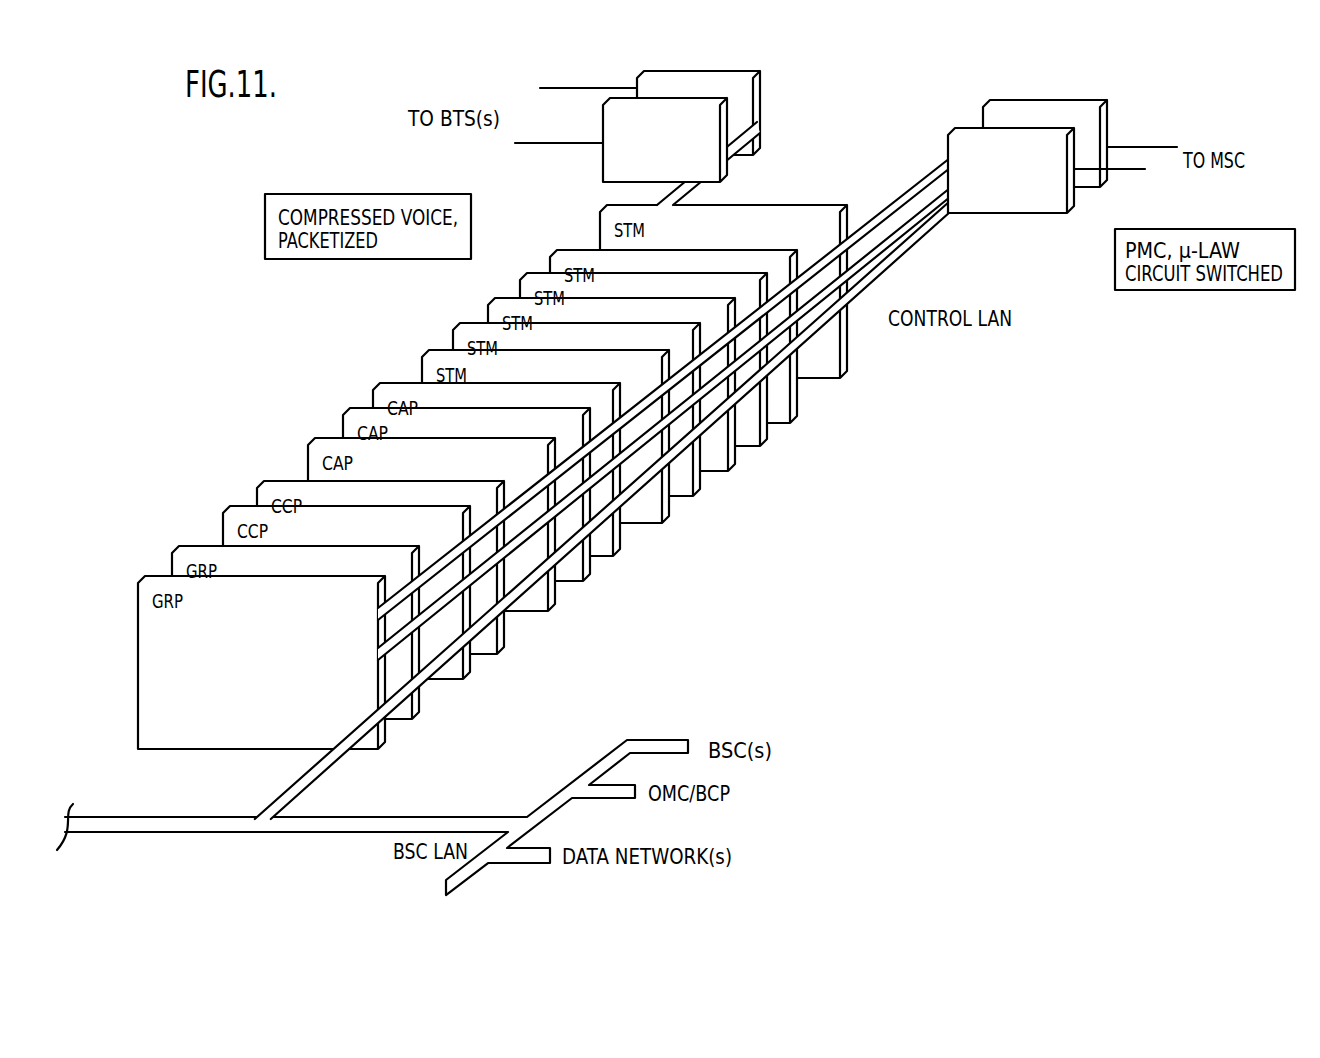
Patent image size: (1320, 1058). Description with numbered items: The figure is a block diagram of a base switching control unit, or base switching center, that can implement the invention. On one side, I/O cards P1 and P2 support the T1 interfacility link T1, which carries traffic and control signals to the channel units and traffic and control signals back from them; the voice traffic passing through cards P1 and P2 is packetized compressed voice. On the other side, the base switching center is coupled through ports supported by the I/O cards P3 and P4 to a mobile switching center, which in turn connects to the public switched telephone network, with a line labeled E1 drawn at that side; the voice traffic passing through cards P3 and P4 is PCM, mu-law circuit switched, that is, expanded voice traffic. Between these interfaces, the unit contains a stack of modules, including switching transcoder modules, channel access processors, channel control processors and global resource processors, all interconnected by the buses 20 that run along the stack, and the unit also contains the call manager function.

The buses 20 is at (680, 447).
The I/O card P1 is at (752, 108).
The I/O card P2 is at (603, 161).
The I/O card P3 is at (1105, 113).
The I/O card P4 is at (1007, 207).
The T1 interfacility link T1 is at (588, 76).
The E1 line E1 is at (1142, 135).